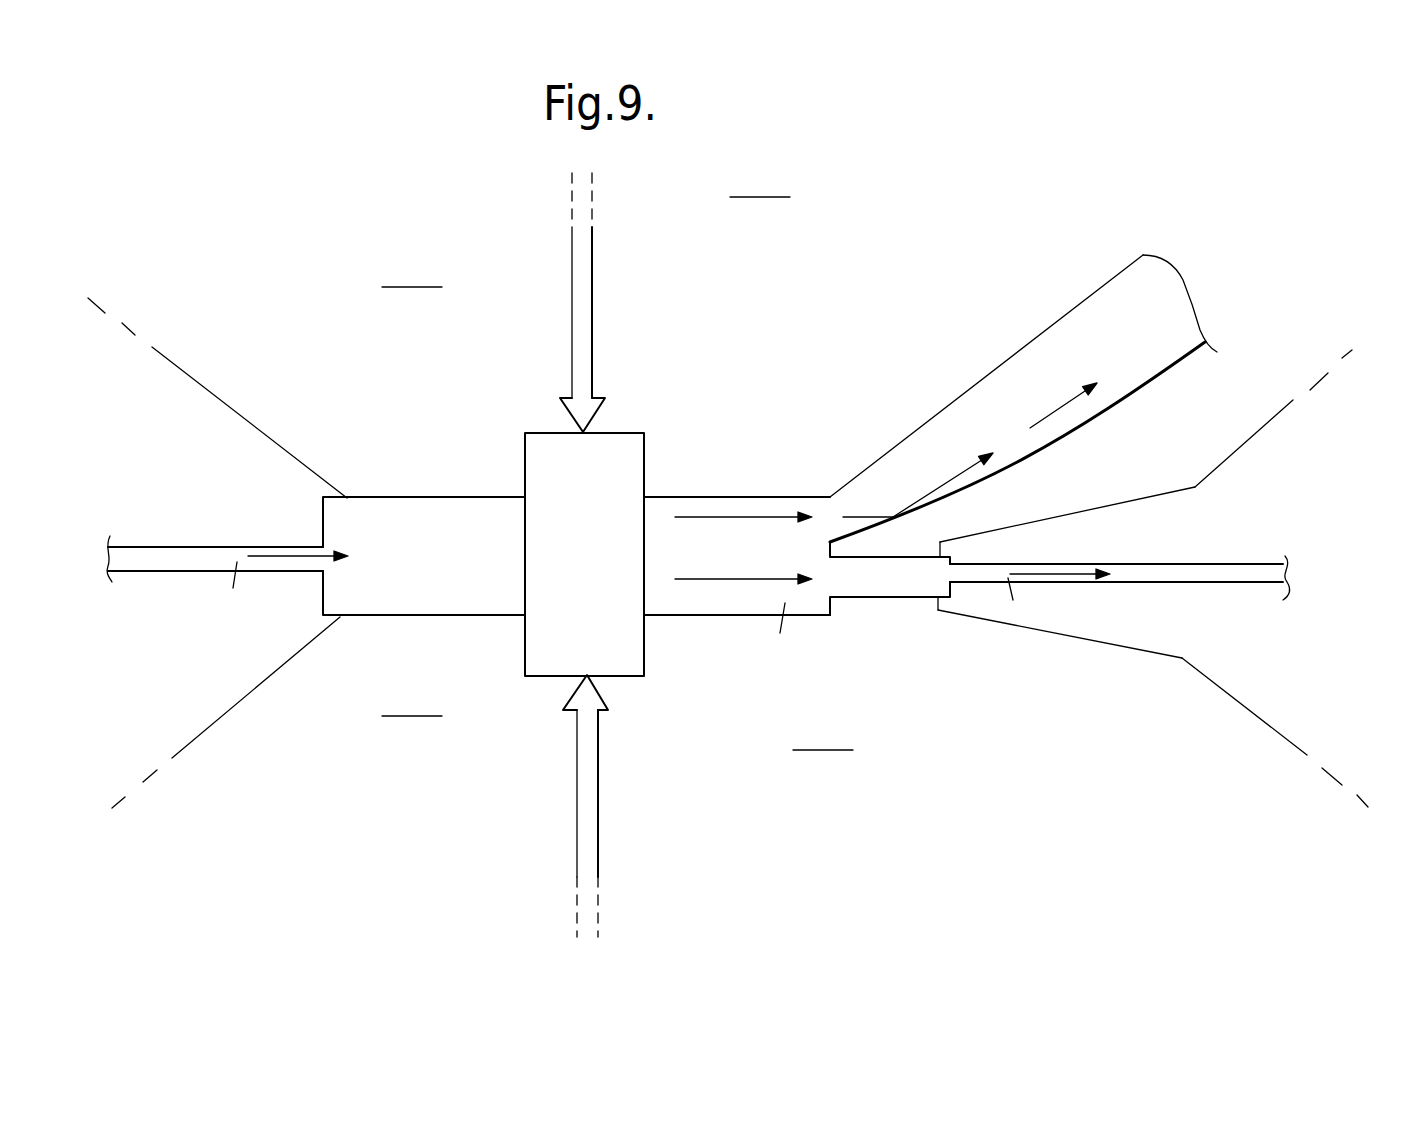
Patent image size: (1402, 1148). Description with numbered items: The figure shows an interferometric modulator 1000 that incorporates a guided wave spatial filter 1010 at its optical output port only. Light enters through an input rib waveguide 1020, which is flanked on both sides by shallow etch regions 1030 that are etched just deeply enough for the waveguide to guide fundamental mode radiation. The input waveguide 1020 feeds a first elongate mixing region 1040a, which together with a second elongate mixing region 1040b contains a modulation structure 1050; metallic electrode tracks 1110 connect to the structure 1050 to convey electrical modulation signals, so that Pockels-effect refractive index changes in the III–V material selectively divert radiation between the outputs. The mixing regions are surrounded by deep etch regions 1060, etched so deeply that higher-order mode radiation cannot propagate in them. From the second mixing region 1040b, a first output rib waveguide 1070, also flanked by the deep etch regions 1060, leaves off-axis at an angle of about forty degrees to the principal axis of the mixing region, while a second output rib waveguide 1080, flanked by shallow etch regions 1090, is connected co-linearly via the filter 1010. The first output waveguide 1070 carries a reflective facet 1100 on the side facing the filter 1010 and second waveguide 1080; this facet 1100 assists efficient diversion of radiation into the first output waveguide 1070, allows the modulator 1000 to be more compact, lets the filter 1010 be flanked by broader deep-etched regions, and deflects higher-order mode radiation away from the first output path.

The interferometric modulator 1000 is at (1024, 177).
The guided wave spatial filter 1010 is at (918, 592).
The input rib waveguide 1020 is at (175, 563).
The shallow etch regions 1030 is at (200, 471).
The first elongate mixing region 1040a is at (466, 604).
The second elongate mixing region 1040b is at (767, 604).
The modulation structure 1050 is at (536, 580).
The deep etch regions 1060 is at (1130, 478).
The first output rib waveguide 1070 is at (1170, 332).
The second output rib waveguide 1080 is at (1173, 575).
The shallow etch regions 1090 is at (1382, 466).
The reflective facet 1100 is at (938, 502).
The metallic electrode tracks 1110 is at (583, 288).